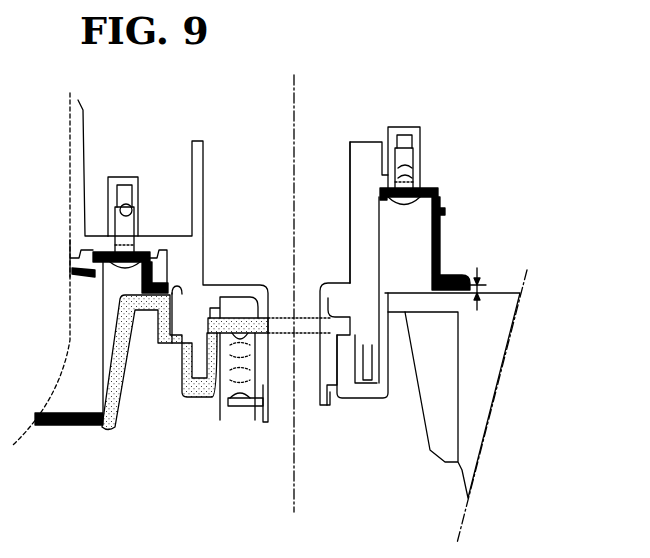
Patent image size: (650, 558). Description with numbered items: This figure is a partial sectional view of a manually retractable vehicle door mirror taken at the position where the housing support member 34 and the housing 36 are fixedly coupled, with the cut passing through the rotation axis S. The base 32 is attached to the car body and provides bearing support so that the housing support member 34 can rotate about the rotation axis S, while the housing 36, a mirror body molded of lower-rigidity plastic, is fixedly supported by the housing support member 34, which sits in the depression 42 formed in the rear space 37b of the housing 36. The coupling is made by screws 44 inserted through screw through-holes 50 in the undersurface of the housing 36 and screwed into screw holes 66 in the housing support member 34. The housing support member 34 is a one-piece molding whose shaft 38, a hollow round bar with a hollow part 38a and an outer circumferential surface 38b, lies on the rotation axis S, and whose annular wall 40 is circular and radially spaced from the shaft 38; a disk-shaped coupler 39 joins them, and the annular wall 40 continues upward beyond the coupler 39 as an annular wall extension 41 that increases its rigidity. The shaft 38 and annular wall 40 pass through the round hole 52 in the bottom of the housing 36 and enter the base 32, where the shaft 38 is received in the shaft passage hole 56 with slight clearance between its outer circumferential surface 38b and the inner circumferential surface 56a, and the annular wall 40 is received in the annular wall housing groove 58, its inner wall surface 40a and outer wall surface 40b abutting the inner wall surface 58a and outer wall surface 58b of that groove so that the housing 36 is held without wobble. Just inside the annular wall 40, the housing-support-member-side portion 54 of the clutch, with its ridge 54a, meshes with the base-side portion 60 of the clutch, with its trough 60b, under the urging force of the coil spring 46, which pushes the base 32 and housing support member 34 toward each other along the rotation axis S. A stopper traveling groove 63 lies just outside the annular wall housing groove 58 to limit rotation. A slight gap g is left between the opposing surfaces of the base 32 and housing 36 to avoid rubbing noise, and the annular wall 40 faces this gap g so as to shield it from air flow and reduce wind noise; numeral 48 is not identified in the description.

The rotation axis S is at (296, 92).
The base 32 is at (483, 307).
The housing support member 34 is at (365, 150).
The housing 36 is at (56, 425).
The rear space 37b is at (535, 95).
The shaft 38 is at (262, 375).
The hollow part 38a is at (271, 362).
The outer circumferential surface 38b is at (252, 295).
The coupler 39 is at (238, 285).
The annular wall 40 is at (352, 398).
The inner wall surface 40a is at (352, 352).
The outer wall surface 40b is at (387, 353).
The annular wall extension 41 is at (367, 207).
The depression 42 is at (398, 233).
The screws 44 is at (126, 222).
The coil spring 46 is at (230, 377).
The flange 48 is at (240, 406).
The screw through-holes 50 is at (128, 250).
The round hole 52 is at (177, 285).
The housing-support-member-side portion of clutch 54 is at (345, 310).
The ridge 54a is at (215, 300).
The shaft passage hole 56 is at (262, 325).
The inner circumferential surface 56a is at (328, 300).
The annular wall housing groove 58 is at (366, 382).
The inner wall surface 58a is at (357, 384).
The outer wall surface 58b is at (370, 388).
The base-side portion of clutch 60 is at (347, 328).
The trough 60b is at (184, 355).
The stopper traveling groove 63 is at (147, 333).
The screw holes 66 is at (126, 219).
The gap g is at (479, 286).